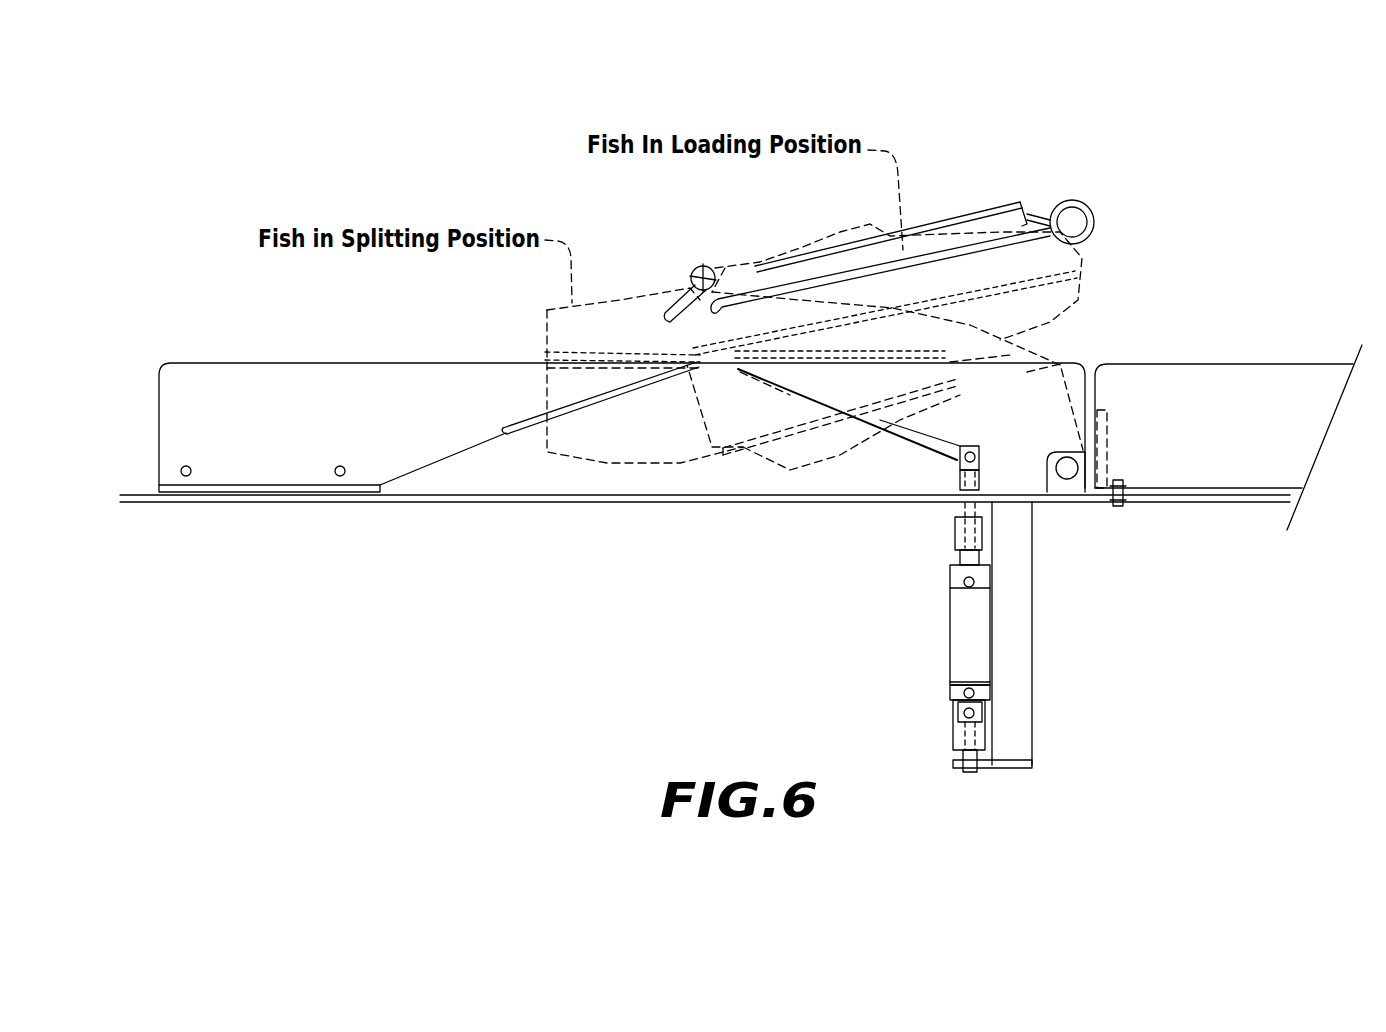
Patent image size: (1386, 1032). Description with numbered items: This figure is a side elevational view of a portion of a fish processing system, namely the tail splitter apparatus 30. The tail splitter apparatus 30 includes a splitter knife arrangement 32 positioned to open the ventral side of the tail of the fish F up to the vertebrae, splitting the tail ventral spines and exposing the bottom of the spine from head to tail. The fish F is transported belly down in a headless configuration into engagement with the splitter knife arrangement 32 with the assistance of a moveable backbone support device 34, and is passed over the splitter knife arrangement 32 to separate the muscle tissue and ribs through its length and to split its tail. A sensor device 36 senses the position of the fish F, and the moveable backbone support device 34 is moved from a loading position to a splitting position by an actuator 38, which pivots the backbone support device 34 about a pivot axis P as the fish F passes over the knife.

The tail splitter apparatus 30 is at (1188, 178).
The splitter knife arrangement 32 is at (530, 420).
The moveable backbone support device 34 is at (800, 470).
The sensor device 36 is at (680, 303).
The actuator 38 is at (962, 618).
The fish F is at (995, 258).
The pivot axis P is at (1067, 470).